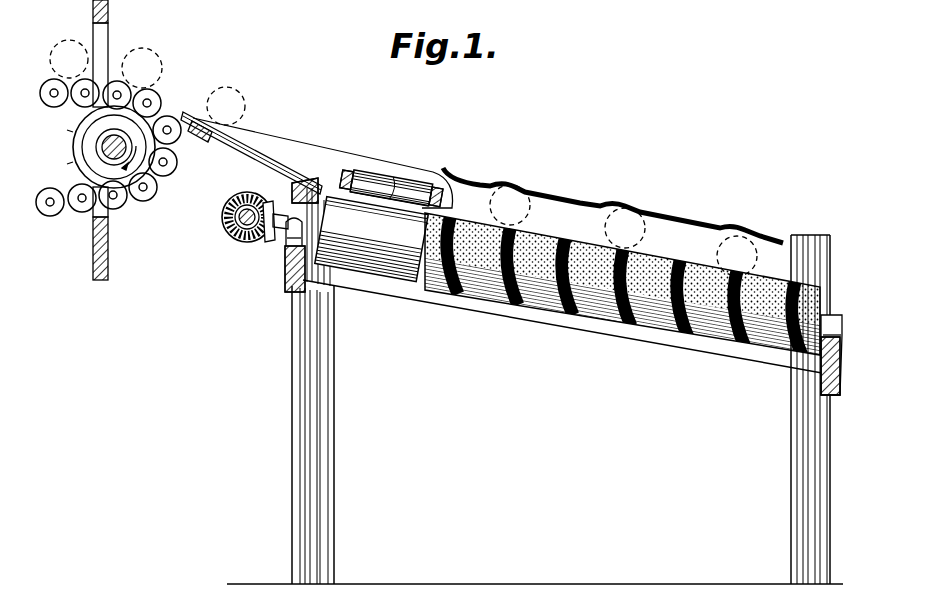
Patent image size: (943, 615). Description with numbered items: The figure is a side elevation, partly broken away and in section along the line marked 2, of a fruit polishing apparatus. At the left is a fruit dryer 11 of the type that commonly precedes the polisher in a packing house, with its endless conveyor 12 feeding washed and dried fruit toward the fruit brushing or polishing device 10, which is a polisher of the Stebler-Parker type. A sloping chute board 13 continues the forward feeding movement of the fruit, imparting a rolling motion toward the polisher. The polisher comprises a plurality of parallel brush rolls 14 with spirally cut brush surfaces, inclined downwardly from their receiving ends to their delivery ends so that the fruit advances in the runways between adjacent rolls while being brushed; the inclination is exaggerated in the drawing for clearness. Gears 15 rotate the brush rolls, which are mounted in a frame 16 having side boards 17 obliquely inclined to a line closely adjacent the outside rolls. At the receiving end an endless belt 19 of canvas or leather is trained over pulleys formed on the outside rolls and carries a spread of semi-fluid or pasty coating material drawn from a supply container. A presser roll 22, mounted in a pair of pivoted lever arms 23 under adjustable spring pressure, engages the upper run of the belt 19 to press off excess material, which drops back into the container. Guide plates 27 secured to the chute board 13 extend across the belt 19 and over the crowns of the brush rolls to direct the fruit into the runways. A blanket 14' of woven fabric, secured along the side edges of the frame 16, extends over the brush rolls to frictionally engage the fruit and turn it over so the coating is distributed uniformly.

The section line 2- 2 is at (437, 170).
The fruit brushing or polishing device 10 is at (580, 219).
The fruit dryer 11 is at (108, 13).
The endless conveyor 12 is at (165, 92).
The sloping chute board 13 is at (236, 154).
The brush rolls 14 is at (622, 299).
The blanket 14' is at (613, 205).
The gears 15 is at (270, 238).
The frame 16 is at (336, 453).
The side boards 17 is at (632, 338).
The endless belt 19 is at (395, 283).
The presser roll 22 is at (372, 175).
The lever arms 23 is at (338, 173).
The guide plates 27 is at (262, 138).